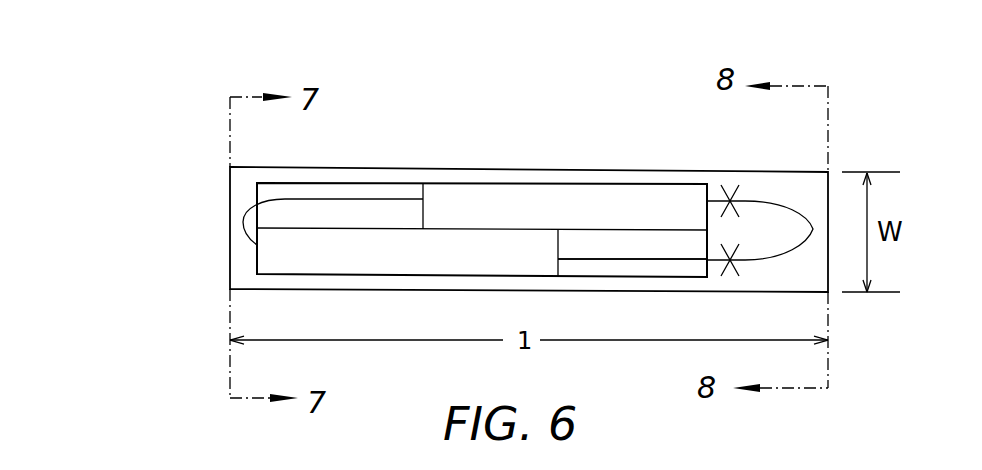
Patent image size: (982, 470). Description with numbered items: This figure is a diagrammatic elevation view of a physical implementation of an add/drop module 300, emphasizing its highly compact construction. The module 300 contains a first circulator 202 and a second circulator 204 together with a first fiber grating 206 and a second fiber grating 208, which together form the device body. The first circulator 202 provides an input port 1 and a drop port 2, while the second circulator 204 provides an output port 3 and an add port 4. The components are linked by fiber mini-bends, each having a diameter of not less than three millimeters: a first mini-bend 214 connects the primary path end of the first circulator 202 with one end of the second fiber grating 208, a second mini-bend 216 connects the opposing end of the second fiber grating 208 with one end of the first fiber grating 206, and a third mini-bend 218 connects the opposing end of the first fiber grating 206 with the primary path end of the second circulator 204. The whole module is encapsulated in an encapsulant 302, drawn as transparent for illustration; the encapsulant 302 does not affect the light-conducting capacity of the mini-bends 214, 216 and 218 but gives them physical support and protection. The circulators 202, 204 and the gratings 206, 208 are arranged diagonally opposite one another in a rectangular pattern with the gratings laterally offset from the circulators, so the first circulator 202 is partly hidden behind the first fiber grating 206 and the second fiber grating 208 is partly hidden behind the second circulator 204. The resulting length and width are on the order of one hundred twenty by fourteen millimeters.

The add/drop module 300 is at (555, 80).
The encapsulant 302 is at (522, 168).
The first circulator 202 is at (333, 183).
The second circulator 204 is at (433, 265).
The first fiber grating 206 is at (578, 218).
The second fiber grating 208 is at (640, 229).
The first fiber mini-bend 214 is at (772, 202).
The third fiber mini-bend 218 is at (772, 202).
The second fiber mini-bend 216 is at (243, 224).
The input port 1 is at (257, 198).
The drop port 2 is at (257, 198).
The output port 3 is at (257, 258).
The add port 4 is at (257, 258).